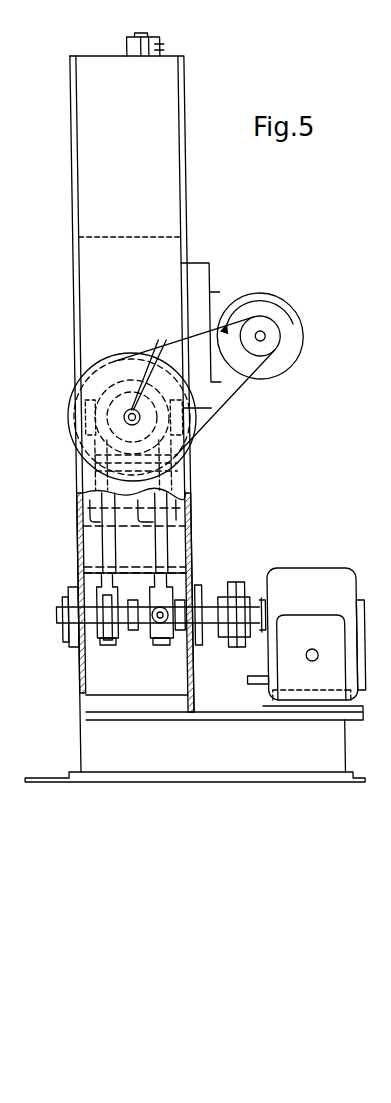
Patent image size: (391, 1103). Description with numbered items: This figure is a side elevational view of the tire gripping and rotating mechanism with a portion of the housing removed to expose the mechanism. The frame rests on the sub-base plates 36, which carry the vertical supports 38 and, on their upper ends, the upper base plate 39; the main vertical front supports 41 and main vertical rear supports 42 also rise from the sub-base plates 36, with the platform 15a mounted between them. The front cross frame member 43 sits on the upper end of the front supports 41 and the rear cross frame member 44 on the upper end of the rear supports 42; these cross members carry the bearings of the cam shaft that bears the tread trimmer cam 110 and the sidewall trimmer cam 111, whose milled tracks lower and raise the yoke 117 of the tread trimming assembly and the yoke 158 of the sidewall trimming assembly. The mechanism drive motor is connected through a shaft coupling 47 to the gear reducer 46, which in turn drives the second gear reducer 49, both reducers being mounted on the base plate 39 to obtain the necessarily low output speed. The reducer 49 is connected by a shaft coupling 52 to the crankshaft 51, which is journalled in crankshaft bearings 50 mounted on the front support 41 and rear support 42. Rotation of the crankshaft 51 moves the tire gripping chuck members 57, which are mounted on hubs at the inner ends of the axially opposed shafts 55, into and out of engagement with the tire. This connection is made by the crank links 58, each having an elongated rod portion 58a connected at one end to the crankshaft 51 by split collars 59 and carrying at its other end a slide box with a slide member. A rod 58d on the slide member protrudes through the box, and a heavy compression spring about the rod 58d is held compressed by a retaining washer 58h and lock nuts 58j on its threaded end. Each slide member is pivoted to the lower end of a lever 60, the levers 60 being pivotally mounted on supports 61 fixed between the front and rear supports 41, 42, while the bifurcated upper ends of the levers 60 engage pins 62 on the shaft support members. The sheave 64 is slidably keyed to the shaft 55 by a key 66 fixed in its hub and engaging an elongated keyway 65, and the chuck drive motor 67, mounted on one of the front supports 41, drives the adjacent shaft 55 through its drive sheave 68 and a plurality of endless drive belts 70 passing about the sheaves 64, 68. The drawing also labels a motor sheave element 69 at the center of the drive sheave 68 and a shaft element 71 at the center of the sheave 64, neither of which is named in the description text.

The platform 15a is at (178, 547).
The sub-base plates 36 is at (278, 780).
The vertical supports 38 is at (103, 750).
The upper base plate 39 is at (239, 718).
The main vertical front supports 41 is at (185, 250).
The main vertical rear supports 42 is at (71, 255).
The front cross frame member 43 is at (184, 140).
The rear cross frame member 44 is at (71, 128).
The gear reducer 46 is at (318, 678).
The shaft coupling 47 is at (350, 660).
The second gear reducer 49 is at (319, 598).
The crankshaft bearings 50 is at (58, 593).
The crankshaft 51 is at (52, 612).
The shaft coupling 52 is at (236, 580).
The shafts 55 is at (121, 415).
The tire gripping chuck member 57 is at (63, 412).
The crank links 58 is at (95, 658).
The elongated rod portion 58a is at (125, 640).
The rod 58d is at (165, 612).
The retaining washer 58h is at (189, 640).
The lock nuts 58j is at (52, 645).
The split collars 59 is at (100, 645).
The lever 60 is at (151, 548).
The supports 61 is at (180, 503).
The pins 62 is at (79, 416).
The sheave 64 is at (88, 453).
The elongated keyway 65 is at (123, 358).
The key 66 is at (152, 366).
The chuck drive motor 67 is at (280, 307).
The drive sheave 68 is at (272, 340).
The pulley shaft 69 is at (258, 335).
The endless drive belts 70 is at (245, 380).
The pulley shaft 71 is at (121, 412).
The tread trimmer cam 110 is at (140, 36).
The sidewall trimmer cam 111 is at (150, 36).
The yoke 117 is at (127, 46).
The yoke 158 is at (160, 47).